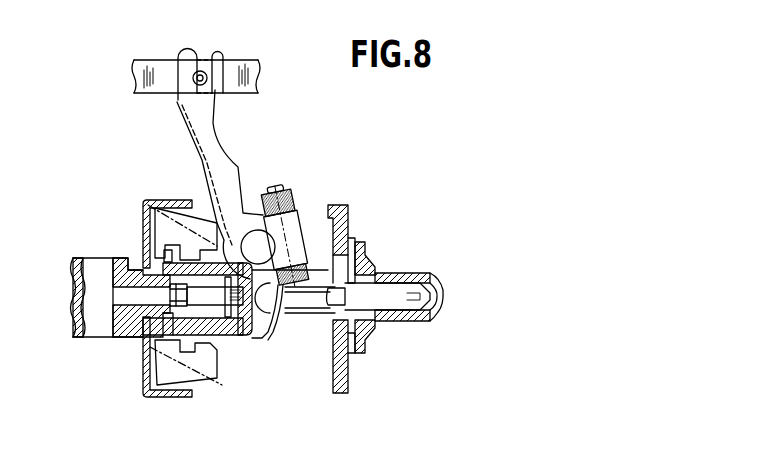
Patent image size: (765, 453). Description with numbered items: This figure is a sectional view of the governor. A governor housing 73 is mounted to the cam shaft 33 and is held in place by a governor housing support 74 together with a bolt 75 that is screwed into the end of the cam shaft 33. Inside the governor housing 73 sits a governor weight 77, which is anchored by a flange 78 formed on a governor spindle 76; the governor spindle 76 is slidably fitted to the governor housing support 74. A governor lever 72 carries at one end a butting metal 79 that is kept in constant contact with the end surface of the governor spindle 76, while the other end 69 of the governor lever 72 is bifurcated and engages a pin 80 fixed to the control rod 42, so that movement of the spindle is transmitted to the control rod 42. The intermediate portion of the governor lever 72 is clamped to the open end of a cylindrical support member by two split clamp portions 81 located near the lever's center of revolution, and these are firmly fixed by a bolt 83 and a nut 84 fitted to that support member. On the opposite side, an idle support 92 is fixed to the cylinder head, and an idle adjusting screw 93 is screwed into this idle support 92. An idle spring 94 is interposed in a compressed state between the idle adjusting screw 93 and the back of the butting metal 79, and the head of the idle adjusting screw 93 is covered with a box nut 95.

The cam shaft 33 is at (130, 333).
The control rod 42 is at (134, 78).
The other end of the governor lever 69 is at (190, 52).
The governor lever 72 is at (220, 150).
The governor housing 73 is at (148, 232).
The governor housing support 74 is at (180, 330).
The bolt 75 is at (243, 330).
The governor spindle 76 is at (228, 318).
The governor weight 77 is at (169, 210).
The flange 78 is at (164, 252).
The butting metal 79 is at (262, 328).
The pin 80 is at (202, 72).
The split clamp portions 81 is at (286, 224).
The bolt 83 is at (300, 328).
The nut 84 is at (282, 195).
The idle support 92 is at (364, 250).
The idle adjusting screw 93 is at (385, 325).
The idle spring 94 is at (345, 355).
The box nut 95 is at (418, 320).